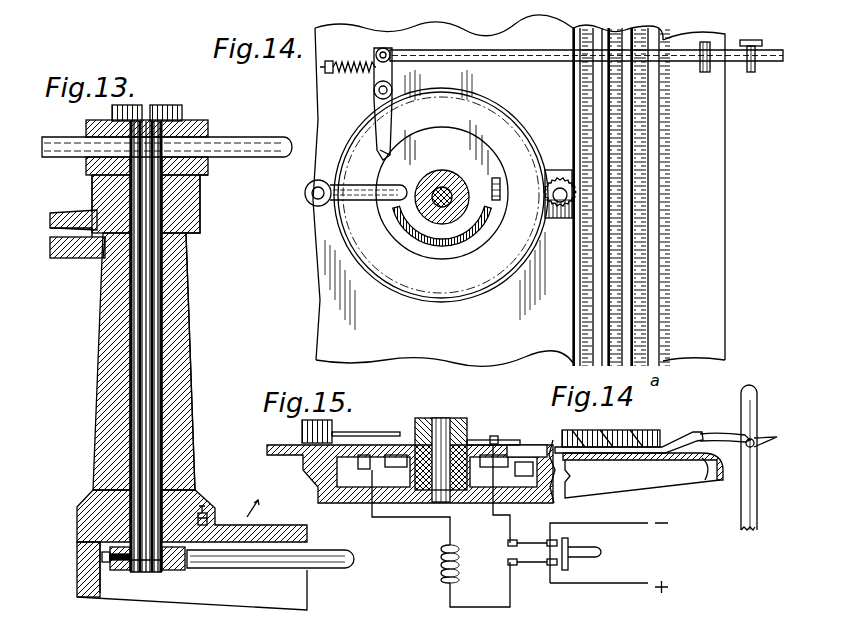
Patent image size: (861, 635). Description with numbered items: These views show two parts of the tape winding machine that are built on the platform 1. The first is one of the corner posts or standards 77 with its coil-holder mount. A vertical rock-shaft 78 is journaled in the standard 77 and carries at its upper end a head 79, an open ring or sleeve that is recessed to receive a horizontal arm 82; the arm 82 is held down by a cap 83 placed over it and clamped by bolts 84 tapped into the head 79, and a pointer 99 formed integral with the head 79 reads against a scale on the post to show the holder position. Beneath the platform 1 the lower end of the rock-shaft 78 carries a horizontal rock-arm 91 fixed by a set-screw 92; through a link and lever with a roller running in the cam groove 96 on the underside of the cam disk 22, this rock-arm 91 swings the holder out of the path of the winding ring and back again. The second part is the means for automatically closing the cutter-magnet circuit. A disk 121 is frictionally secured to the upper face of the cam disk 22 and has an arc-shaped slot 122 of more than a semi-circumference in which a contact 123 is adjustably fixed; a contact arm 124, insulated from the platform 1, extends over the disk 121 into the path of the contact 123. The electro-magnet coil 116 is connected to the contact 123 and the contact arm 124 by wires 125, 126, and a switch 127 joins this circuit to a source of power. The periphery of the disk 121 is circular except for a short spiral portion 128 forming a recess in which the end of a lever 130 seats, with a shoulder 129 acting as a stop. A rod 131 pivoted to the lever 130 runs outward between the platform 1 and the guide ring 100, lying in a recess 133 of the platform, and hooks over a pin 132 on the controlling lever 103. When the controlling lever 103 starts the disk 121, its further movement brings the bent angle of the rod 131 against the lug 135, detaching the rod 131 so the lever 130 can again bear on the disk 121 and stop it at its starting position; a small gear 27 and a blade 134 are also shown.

In FIG. 14, the platform 1 is at (519, 190).
In FIG. 15, the cam disk 22 is at (527, 446).
In FIG. 14, the gear 27 is at (556, 173).
In FIG. 13, the corner post 77 is at (100, 360).
In FIG. 13, the rock-shaft 78 is at (146, 295).
In FIG. 13, the head 79 is at (190, 218).
In FIG. 13, the horizontal arm 82 is at (226, 146).
In FIG. 13, the cap 83 is at (186, 128).
In FIG. 13, the bolts 84 is at (170, 107).
In FIG. 13, the rock-arm 91 is at (255, 562).
In FIG. 13, the set-screw 92 is at (106, 563).
In FIG. 15, the cam groove 96 is at (513, 462).
In FIG. 13, the pointer 99 is at (50, 221).
In FIG. 14, the guide ring 100 is at (655, 256).
In FIG. 14A, the guide ring 100 is at (623, 444).
In FIG. 14A, the controlling lever 103 is at (757, 512).
In FIG. 15, the electro-magnet coil 116 is at (445, 580).
In FIG. 14, the disk 121 is at (442, 189).
In FIG. 15, the disk 121 is at (508, 440).
In FIG. 14, the arc-shaped slot 122 is at (489, 113).
In FIG. 14, the contact 123 is at (500, 170).
In FIG. 15, the contact 123 is at (497, 436).
In FIG. 14, the contact arm 124 is at (331, 166).
In FIG. 15, the contact arm 124 is at (352, 433).
In FIG. 15, the wire 125 is at (512, 530).
In FIG. 15, the wire 126 is at (389, 520).
In FIG. 15, the switch 127 is at (527, 556).
In FIG. 14, the spiral portion 128 is at (387, 153).
In FIG. 14, the shoulder 129 is at (386, 186).
In FIG. 14, the lever 130 is at (374, 102).
In FIG. 14, the rod 131 is at (488, 50).
In FIG. 14A, the rod 131 is at (688, 433).
In FIG. 14, the pin 132 is at (752, 72).
In FIG. 14A, the pin 132 is at (754, 447).
In FIG. 14A, the recess 133 is at (686, 455).
In FIG. 14A, the spring blade 134 is at (714, 438).
In FIG. 14, the lug 135 is at (706, 72).
In FIG. 14A, the lug 135 is at (705, 480).